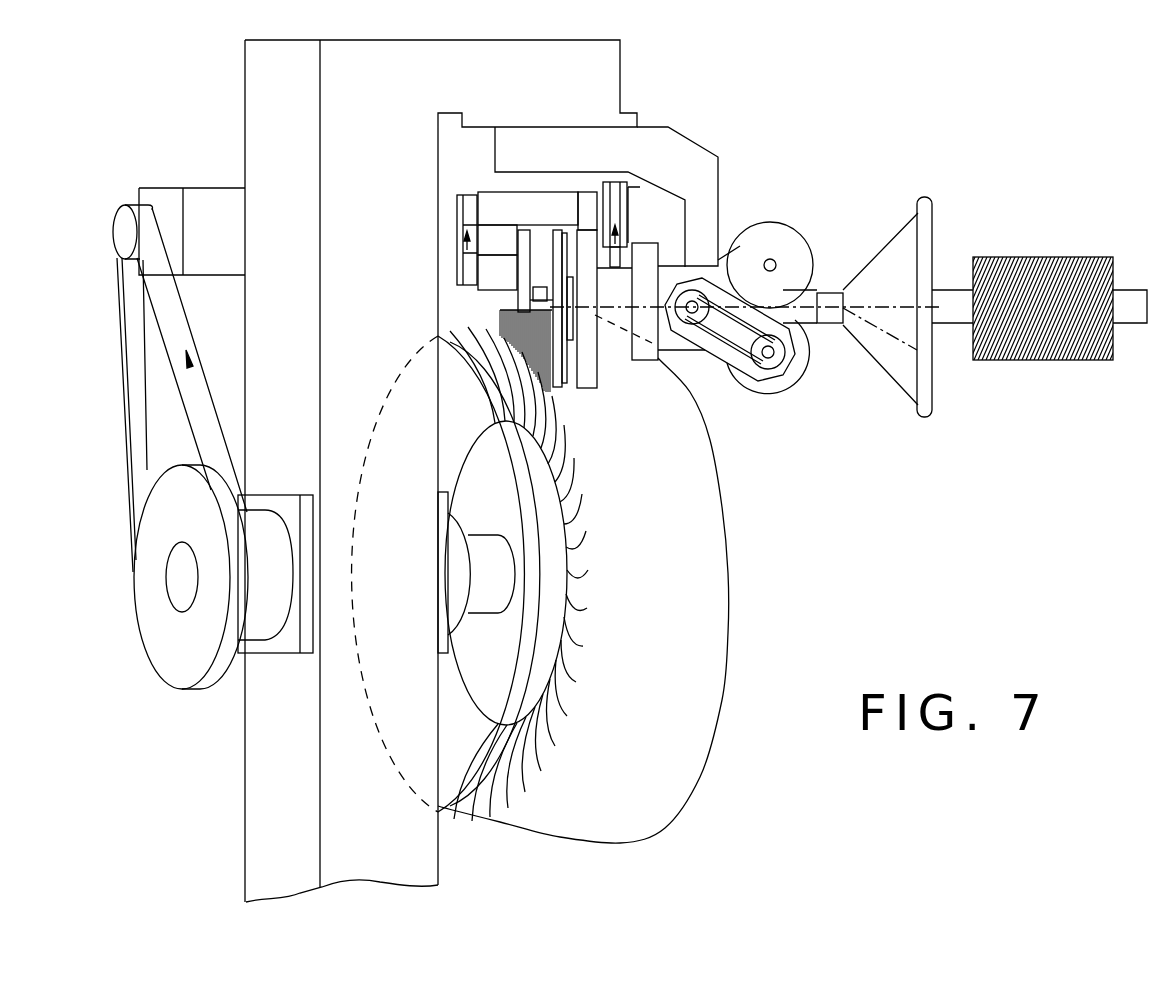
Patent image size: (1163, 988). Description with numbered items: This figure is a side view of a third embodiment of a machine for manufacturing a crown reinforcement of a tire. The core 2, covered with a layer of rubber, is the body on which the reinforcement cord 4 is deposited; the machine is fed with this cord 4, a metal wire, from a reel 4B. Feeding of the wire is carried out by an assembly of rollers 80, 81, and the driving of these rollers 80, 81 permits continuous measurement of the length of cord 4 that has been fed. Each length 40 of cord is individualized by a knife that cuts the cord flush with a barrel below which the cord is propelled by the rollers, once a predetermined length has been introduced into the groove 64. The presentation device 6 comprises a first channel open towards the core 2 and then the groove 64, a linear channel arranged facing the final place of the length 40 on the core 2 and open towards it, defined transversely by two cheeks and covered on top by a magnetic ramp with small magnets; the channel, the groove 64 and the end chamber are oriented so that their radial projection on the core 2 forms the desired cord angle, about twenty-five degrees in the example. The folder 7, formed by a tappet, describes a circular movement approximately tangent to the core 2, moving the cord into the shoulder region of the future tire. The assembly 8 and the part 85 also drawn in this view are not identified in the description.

The core 2 is at (760, 662).
The reinforcement cord 4 is at (1010, 360).
The reel 4B is at (1074, 362).
The presentation device 6 is at (556, 390).
The folder 7 is at (522, 303).
The feed device 8 is at (819, 138).
The length of cord 40 is at (462, 324).
The groove 64 is at (550, 298).
The roller 80 is at (785, 238).
The roller 81 is at (790, 385).
The disc 85 is at (920, 198).